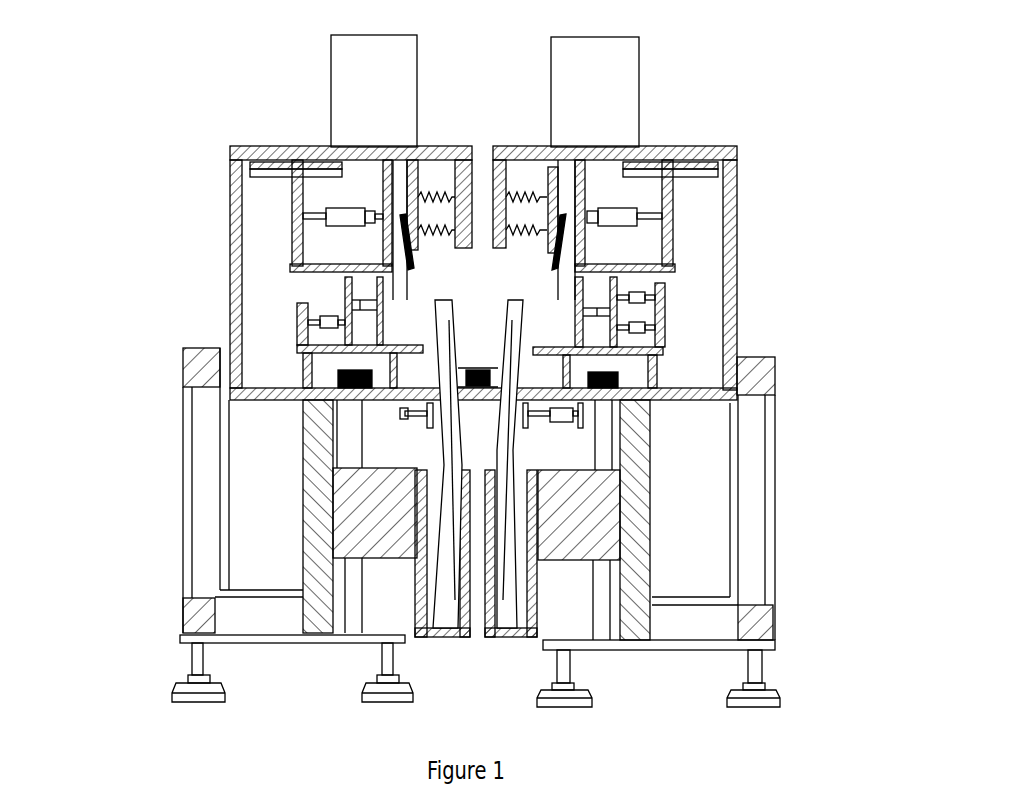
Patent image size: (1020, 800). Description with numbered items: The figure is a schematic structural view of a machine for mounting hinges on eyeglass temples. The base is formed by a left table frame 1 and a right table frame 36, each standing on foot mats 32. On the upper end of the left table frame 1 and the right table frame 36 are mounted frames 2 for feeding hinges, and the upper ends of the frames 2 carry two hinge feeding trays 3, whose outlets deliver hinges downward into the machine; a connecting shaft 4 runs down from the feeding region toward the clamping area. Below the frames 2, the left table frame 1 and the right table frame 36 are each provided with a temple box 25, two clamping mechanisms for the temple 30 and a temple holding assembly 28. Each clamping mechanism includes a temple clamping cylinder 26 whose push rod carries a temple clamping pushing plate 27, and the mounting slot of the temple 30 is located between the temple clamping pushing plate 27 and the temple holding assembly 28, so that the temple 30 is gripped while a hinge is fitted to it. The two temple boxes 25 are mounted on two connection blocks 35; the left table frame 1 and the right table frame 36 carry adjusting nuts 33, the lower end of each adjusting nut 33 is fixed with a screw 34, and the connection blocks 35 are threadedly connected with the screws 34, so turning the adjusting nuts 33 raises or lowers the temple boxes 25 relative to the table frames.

The left table frame 1 is at (205, 530).
The frame 2 is at (233, 202).
The hinge feeding tray 3 is at (360, 77).
The connecting shaft 4 is at (472, 148).
The temple box 25 is at (420, 587).
The temple clamping cylinder 26 is at (330, 403).
The temple clamping pushing plate 27 is at (657, 403).
The temple holding assembly 28 is at (477, 347).
The temple 30 is at (507, 523).
The foot mat 32 is at (195, 663).
The adjusting nut 33 is at (627, 365).
The screw 34 is at (603, 457).
The connection block 35 is at (600, 512).
The right table frame 36 is at (747, 575).